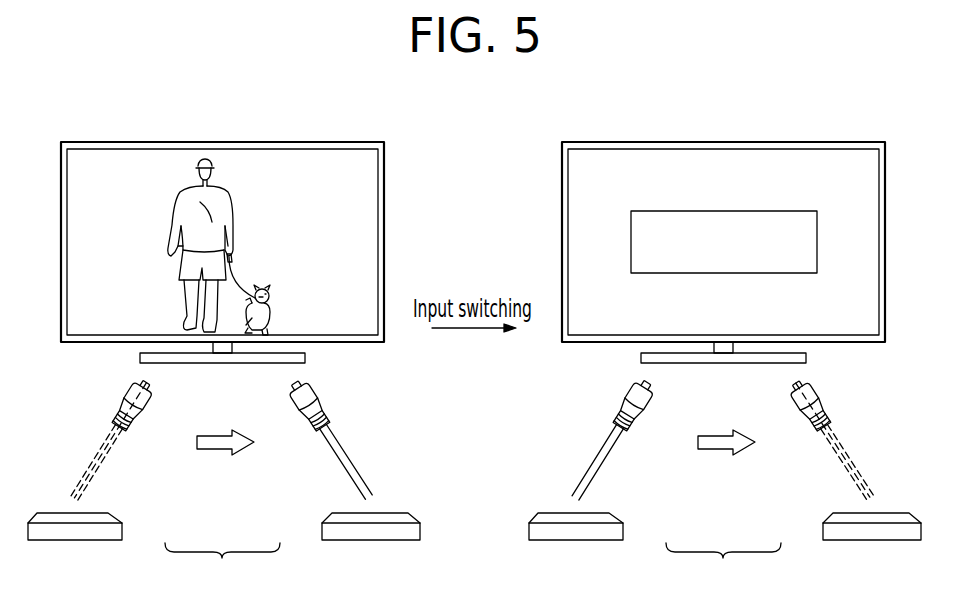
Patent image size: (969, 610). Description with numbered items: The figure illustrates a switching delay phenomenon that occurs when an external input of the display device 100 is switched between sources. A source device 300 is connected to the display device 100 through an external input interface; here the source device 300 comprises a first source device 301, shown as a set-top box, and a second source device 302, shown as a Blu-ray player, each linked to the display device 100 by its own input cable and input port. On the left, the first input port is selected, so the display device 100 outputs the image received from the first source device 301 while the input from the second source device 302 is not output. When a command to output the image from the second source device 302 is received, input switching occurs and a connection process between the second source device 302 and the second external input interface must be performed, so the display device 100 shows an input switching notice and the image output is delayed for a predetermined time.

The display device 100 is at (222, 142).
The source device 300 is at (473, 564).
The first source device 301 is at (122, 528).
The second source device 302 is at (321, 527).